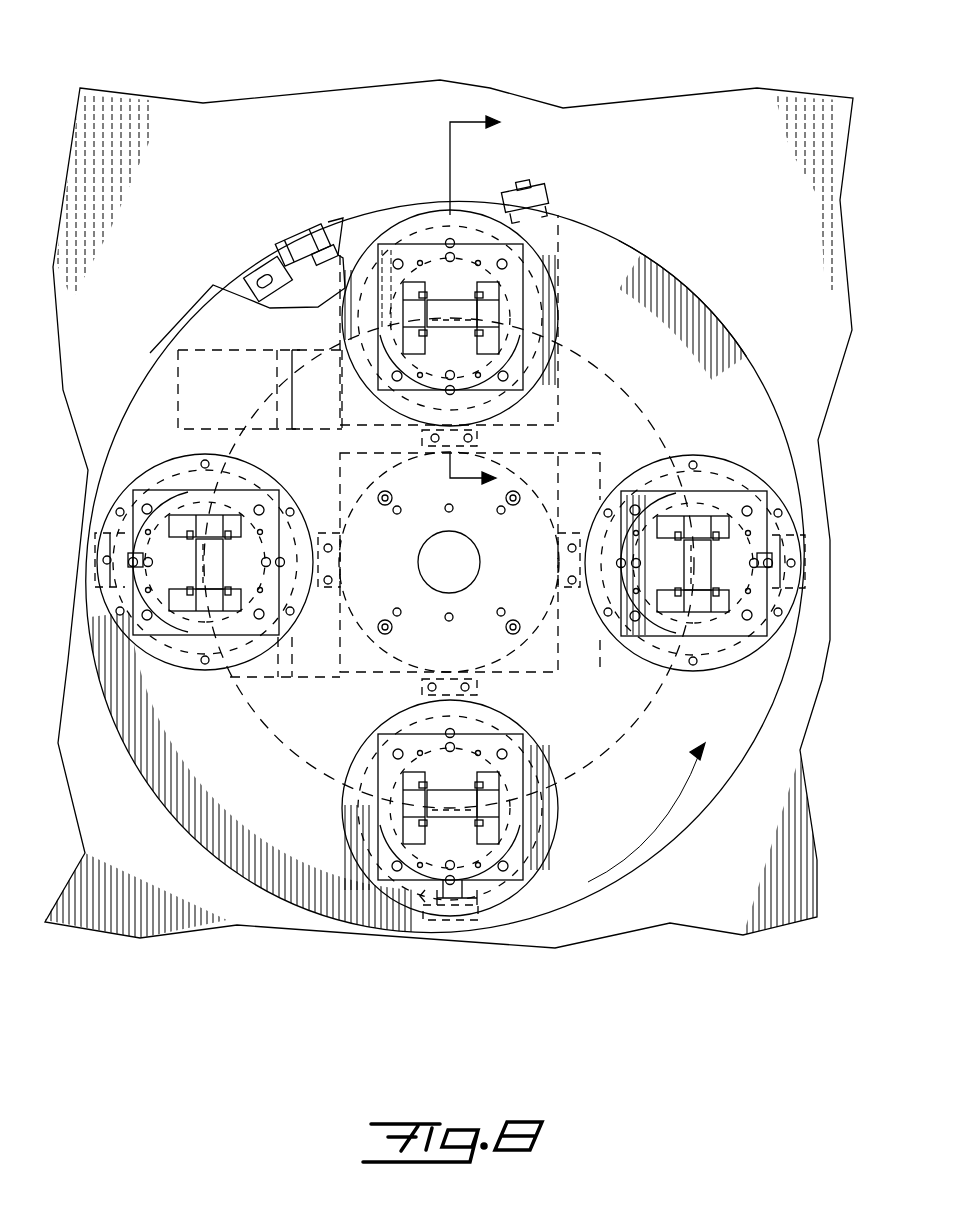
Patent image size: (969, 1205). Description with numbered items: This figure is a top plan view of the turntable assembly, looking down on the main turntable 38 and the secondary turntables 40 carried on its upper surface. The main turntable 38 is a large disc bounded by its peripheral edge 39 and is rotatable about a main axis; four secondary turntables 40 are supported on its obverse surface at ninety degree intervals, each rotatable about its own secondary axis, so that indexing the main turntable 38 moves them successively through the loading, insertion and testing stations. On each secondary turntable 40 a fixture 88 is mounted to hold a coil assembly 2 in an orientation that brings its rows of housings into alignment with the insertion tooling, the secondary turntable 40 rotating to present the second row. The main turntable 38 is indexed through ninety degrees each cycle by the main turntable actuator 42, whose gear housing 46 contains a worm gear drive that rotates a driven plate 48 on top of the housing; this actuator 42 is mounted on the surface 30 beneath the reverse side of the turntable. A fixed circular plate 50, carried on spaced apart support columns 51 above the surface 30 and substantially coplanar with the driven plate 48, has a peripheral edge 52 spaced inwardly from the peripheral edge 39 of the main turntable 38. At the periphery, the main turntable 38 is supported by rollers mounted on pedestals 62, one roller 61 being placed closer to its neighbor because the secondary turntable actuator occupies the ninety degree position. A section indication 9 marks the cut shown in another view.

The surface 30 is at (422, 110).
The main turntable 38 is at (610, 880).
The peripheral edge 39 is at (663, 270).
The secondary turntables 40 is at (395, 240).
The coil assembly 2 is at (436, 298).
The fixture 88 is at (497, 336).
The main turntable actuator 42 is at (360, 677).
The gear housing 46 is at (565, 222).
The driven plate 48 is at (548, 492).
The fixed circular plate 50 is at (615, 762).
The support columns 51 is at (345, 490).
The peripheral edge 52 is at (660, 693).
The roller 61 is at (301, 237).
The pedestals 62 is at (278, 250).
The section line 9- 9 is at (487, 313).